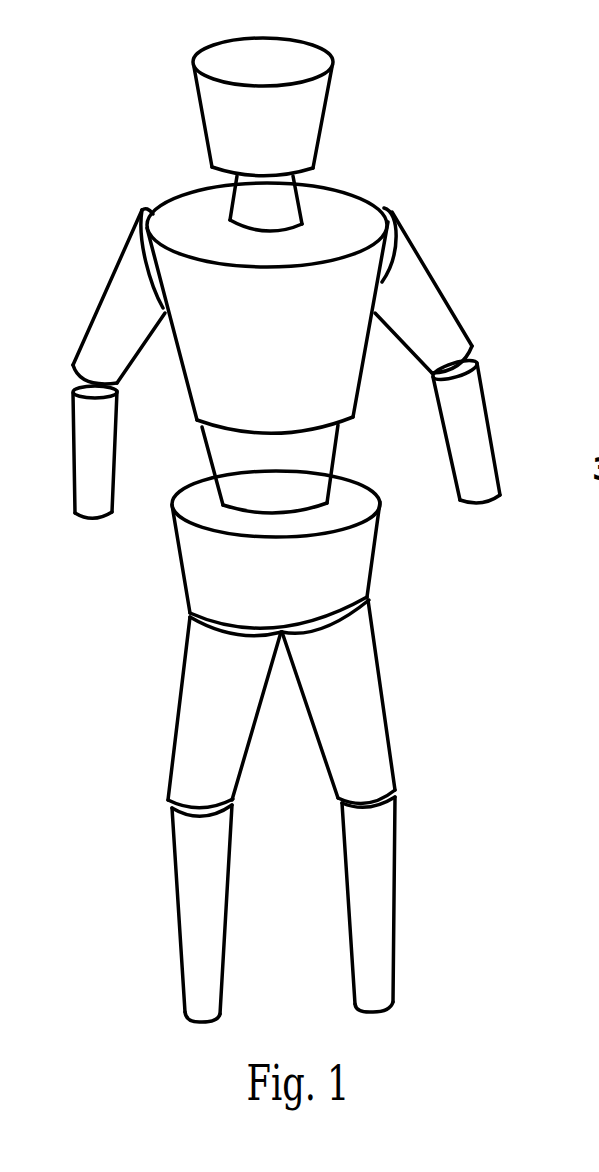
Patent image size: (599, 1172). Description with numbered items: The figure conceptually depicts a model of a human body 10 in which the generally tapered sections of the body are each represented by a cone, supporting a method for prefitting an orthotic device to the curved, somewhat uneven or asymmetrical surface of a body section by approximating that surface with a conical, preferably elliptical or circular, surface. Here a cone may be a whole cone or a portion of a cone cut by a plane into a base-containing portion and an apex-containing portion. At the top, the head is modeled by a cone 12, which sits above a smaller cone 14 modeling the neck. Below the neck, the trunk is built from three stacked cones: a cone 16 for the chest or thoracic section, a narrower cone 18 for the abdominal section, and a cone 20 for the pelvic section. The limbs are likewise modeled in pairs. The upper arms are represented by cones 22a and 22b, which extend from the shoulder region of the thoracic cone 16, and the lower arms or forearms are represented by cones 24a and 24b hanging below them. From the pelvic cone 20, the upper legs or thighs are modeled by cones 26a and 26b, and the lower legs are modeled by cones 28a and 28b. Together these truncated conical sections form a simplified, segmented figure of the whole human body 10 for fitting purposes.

The model of a human body 10 is at (392, 59).
The cone 12 is at (200, 85).
The cone 14 is at (247, 200).
The cone 16 is at (327, 203).
The cone 18 is at (322, 455).
The cone 20 is at (353, 567).
The cone 22a is at (123, 273).
The cone 22b is at (417, 273).
The cone 24a is at (103, 473).
The cone 24b is at (475, 425).
The cone 26a is at (193, 752).
The cone 26b is at (383, 743).
The cone 28a is at (183, 840).
The cone 28b is at (383, 832).